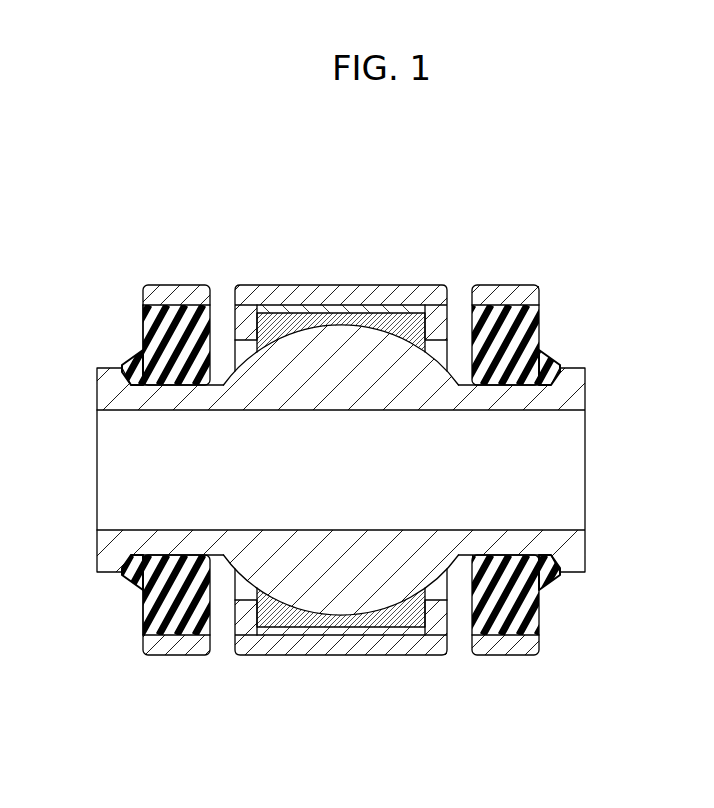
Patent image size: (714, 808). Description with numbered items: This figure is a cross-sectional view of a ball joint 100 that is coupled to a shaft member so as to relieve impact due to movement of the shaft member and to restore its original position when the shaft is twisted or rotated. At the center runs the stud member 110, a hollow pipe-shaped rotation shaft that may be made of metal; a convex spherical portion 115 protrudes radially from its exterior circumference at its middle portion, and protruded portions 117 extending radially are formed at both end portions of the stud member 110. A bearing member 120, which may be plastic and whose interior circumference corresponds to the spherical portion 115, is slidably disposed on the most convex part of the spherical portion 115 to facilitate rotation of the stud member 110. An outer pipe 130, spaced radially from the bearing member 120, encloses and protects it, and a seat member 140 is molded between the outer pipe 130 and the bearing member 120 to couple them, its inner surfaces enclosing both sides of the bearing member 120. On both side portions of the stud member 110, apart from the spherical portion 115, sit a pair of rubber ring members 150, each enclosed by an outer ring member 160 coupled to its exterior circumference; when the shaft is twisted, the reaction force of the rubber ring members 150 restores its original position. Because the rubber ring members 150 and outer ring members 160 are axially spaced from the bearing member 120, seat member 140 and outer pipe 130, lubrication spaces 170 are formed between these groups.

The ball joint 100 is at (385, 150).
The stud member 110 is at (564, 396).
The spherical portion 115 is at (417, 370).
The protruded portion 117 is at (110, 380).
The bearing member 120 is at (400, 320).
The outer pipe 130 is at (350, 296).
The seat member 140 is at (236, 318).
The rubber ring member 150 is at (167, 327).
The outer ring member 160 is at (173, 290).
The lubrication space 170 is at (460, 370).